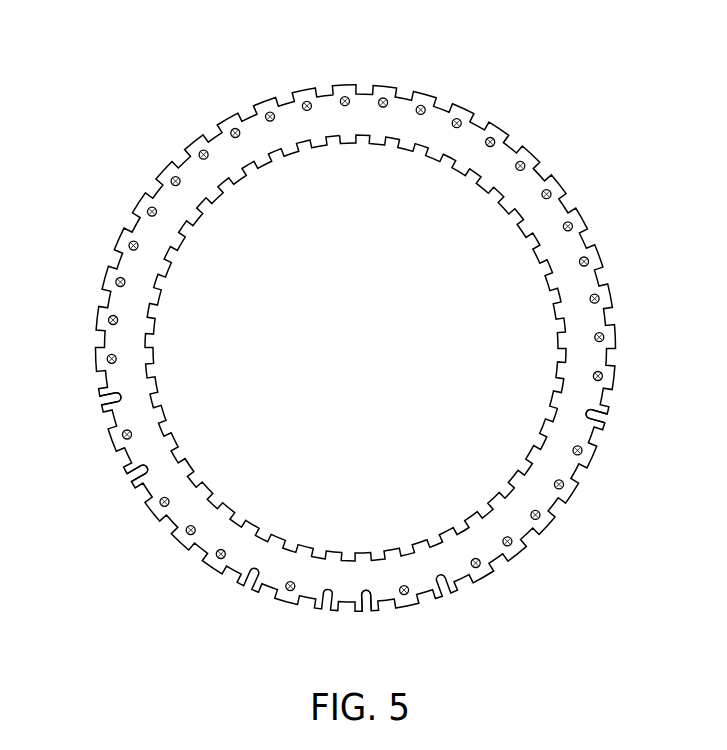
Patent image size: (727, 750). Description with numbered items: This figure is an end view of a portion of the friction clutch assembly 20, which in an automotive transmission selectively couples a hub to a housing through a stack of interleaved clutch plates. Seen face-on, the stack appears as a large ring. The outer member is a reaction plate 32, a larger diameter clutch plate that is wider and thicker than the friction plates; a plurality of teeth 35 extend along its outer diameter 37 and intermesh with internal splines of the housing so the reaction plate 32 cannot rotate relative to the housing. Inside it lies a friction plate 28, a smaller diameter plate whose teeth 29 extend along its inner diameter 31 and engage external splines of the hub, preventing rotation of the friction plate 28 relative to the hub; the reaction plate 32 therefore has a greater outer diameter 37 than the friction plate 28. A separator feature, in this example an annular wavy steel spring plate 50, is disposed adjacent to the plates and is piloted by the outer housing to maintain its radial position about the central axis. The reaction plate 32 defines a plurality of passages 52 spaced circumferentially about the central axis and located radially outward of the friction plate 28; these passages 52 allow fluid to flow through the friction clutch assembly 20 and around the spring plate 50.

The friction clutch assembly 20 is at (348, 341).
The friction plate 28 is at (448, 183).
The teeth 29 is at (355, 348).
The inner diameter 31 is at (355, 348).
The reaction plate 32 is at (469, 150).
The teeth 35 is at (428, 80).
The outer diameter 37 is at (356, 313).
The spring plate 50 is at (321, 606).
The passage 52 is at (135, 474).